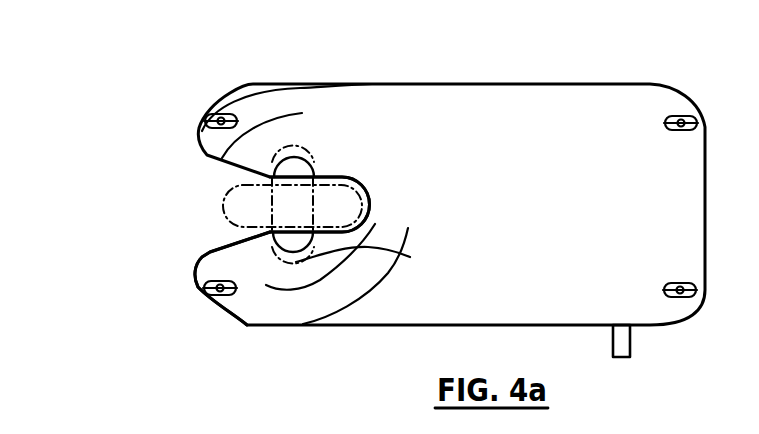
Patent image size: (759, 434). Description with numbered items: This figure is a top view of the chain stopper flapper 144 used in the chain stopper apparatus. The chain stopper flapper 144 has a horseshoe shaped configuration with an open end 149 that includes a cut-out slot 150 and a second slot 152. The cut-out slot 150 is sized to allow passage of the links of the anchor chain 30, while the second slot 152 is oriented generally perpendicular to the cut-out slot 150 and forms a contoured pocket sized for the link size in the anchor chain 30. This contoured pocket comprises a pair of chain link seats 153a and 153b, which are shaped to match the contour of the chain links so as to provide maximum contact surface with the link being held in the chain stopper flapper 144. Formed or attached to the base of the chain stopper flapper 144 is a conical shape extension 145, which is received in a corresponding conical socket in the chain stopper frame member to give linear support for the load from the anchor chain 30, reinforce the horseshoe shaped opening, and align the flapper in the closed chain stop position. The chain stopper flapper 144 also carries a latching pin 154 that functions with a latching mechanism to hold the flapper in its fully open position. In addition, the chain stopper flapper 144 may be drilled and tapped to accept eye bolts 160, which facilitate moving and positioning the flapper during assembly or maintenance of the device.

The chain stopper flapper 144 is at (522, 78).
The anchor chain 30 is at (352, 207).
The open end 149 is at (196, 210).
The chain link seat 153a is at (298, 166).
The chain link seat 153b is at (290, 243).
The cut-out slot 150 is at (211, 252).
The second slot 152 is at (357, 257).
The conical shape extension 145 is at (370, 272).
The latching pin 154 is at (630, 345).
The eye bolts 160 is at (208, 119).